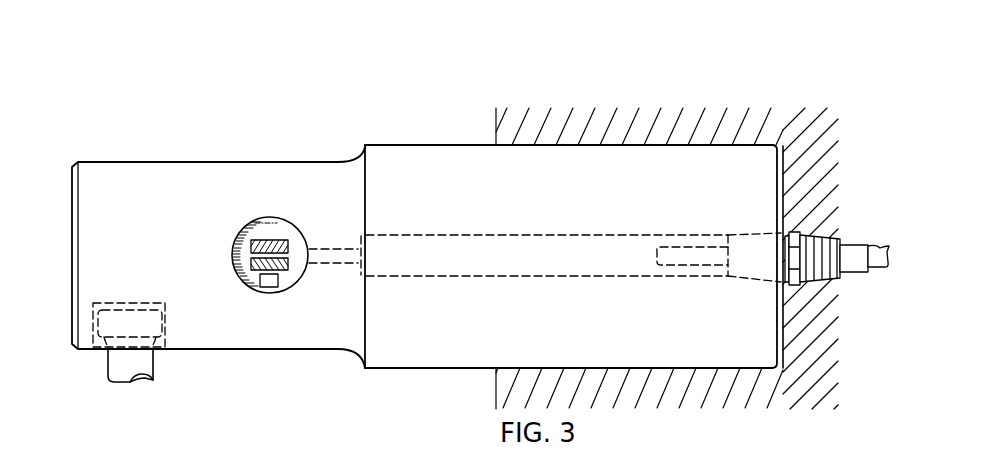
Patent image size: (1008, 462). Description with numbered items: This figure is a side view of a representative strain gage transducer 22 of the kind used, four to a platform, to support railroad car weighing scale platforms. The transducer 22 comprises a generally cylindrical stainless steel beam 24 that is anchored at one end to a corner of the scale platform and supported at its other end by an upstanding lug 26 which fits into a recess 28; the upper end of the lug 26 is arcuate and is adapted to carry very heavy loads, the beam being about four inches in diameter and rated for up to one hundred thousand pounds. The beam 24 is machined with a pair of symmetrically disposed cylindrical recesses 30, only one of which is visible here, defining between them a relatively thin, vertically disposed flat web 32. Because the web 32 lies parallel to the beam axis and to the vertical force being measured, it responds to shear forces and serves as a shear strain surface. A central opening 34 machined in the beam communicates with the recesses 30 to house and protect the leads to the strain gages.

The strain gage transducer 22 is at (418, 143).
The cylindrical stainless steel beam 24 is at (426, 355).
The upstanding lug 26 is at (143, 362).
The recess 28 is at (165, 323).
The cylindrical recess 30 is at (233, 240).
The flat web 32 is at (277, 229).
The central opening 34 is at (477, 233).